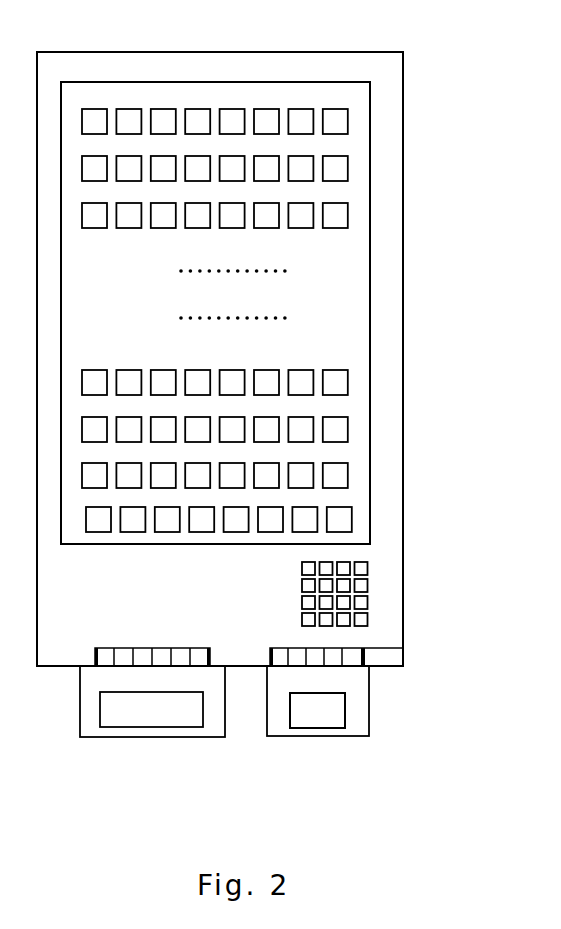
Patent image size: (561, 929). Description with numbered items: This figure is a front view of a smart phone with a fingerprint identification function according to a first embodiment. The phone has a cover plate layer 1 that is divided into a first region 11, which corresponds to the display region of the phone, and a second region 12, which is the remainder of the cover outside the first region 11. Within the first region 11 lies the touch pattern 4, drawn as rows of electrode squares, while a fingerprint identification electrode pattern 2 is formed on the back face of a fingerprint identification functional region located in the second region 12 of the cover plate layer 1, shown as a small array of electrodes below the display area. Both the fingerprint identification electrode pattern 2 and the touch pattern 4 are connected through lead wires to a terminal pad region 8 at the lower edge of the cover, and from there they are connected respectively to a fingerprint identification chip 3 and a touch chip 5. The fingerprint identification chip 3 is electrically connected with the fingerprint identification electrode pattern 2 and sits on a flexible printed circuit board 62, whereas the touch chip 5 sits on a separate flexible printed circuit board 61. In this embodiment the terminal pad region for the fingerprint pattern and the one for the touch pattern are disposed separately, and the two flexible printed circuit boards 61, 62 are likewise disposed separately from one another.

The cover plate layer 1 is at (369, 70).
The first region 11 is at (357, 158).
The second region 12 is at (390, 428).
The touch pattern 4 is at (301, 314).
The fingerprint identification electrode pattern 2 is at (368, 595).
The terminal pad region 8 is at (364, 648).
The flexible printed circuit board 61 is at (88, 697).
The touch chip 5 is at (107, 718).
The flexible printed circuit board 62 is at (363, 700).
The fingerprint identification chip 3 is at (302, 723).